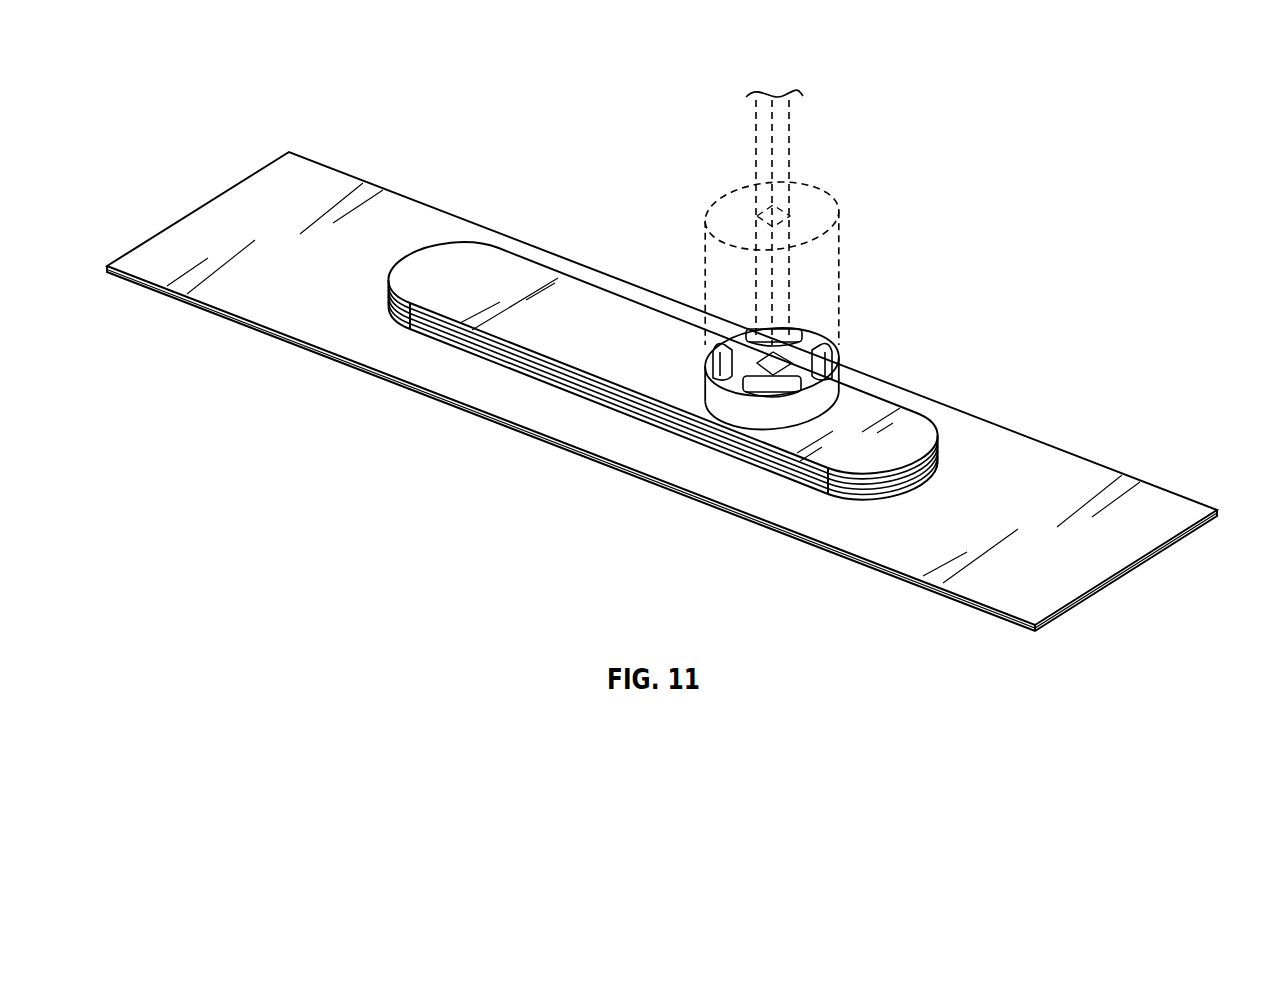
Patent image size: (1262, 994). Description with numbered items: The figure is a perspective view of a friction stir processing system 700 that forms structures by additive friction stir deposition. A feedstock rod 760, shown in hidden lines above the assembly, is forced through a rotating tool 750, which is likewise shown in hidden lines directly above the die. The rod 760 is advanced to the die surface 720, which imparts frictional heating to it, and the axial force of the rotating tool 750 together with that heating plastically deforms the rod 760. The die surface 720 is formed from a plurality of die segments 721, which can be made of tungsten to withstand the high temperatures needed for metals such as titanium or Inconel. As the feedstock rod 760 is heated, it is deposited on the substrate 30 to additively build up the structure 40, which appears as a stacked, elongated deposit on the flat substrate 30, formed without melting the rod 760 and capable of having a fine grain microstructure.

The friction stir processing system 700 is at (1146, 85).
The substrate 30 is at (1158, 498).
The structure 40 is at (923, 423).
The die surface 720 is at (838, 385).
The die segments 721 is at (823, 340).
The rotating tool 750 is at (822, 207).
The feedstock rod 760 is at (776, 152).